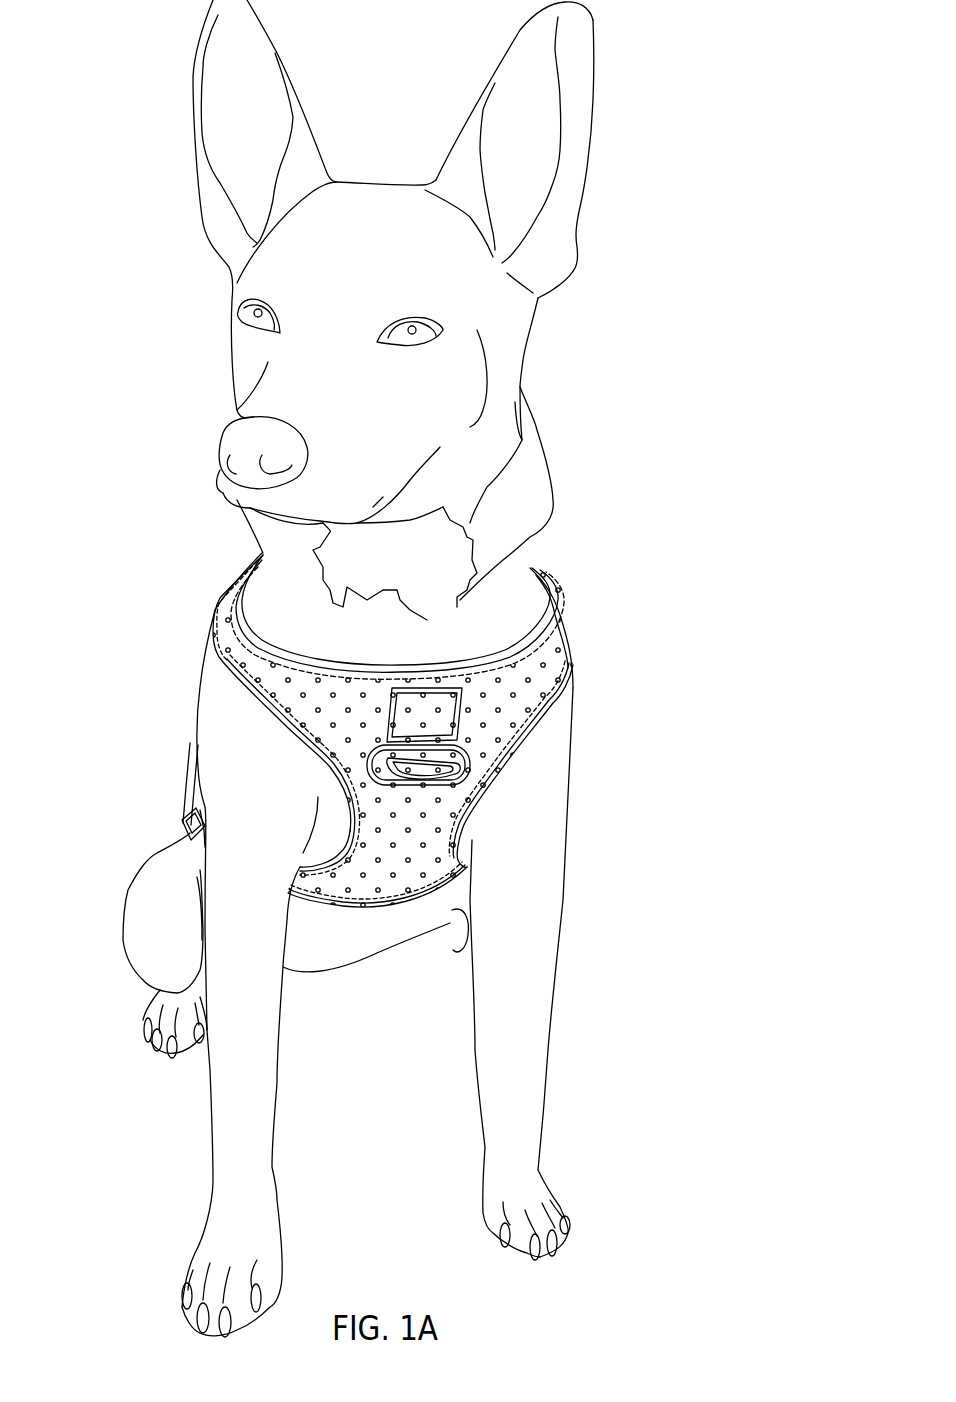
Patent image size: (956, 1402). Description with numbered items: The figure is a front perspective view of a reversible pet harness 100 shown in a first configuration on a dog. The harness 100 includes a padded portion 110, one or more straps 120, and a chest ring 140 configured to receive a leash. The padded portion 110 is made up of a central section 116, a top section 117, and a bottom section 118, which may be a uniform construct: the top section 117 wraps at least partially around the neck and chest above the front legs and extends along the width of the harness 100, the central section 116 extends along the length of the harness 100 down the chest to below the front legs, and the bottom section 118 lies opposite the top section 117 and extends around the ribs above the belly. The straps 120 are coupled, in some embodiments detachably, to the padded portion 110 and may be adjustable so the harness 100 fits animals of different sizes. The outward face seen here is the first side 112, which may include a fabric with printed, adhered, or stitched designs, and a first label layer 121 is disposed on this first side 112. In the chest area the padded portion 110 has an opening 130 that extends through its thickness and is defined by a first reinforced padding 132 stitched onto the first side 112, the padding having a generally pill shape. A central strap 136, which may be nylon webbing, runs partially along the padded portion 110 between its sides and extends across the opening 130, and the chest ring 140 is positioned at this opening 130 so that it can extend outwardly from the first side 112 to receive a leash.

The harness 100 is at (225, 556).
The padded portion 110 is at (225, 673).
The first side 112 is at (560, 637).
The central section 116 is at (417, 830).
The top section 117 is at (482, 695).
The bottom section 118 is at (375, 907).
The straps 120 is at (187, 795).
The first label layer 121 is at (430, 697).
The opening 130 is at (383, 750).
The first reinforced padding 132 is at (467, 770).
The central strap 136 is at (466, 753).
The chest ring 140 is at (442, 777).